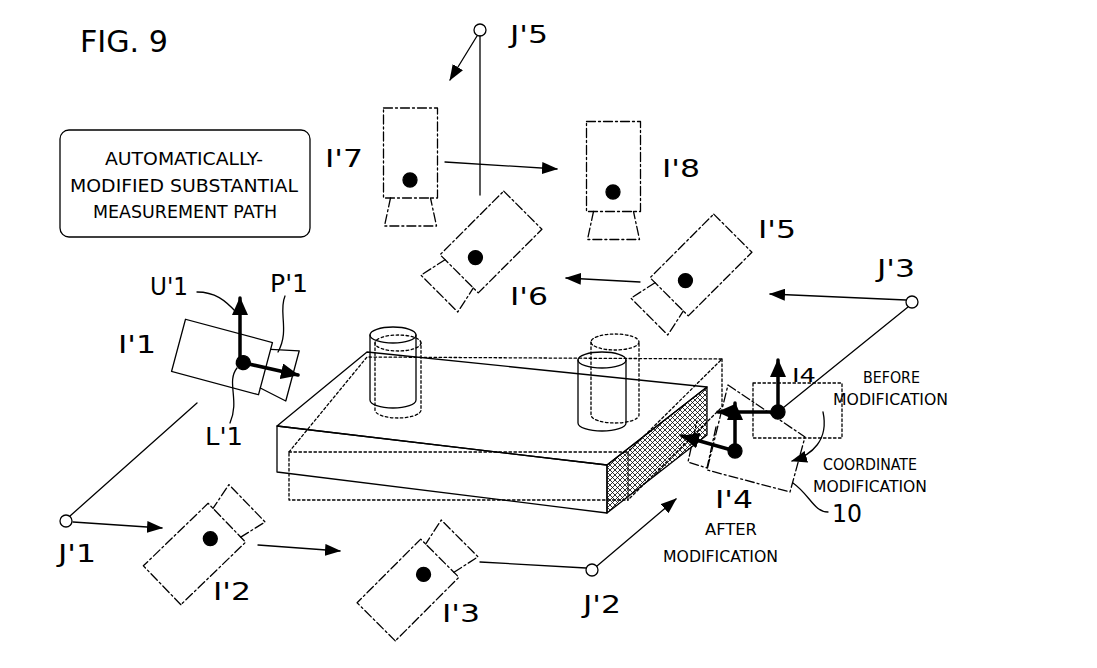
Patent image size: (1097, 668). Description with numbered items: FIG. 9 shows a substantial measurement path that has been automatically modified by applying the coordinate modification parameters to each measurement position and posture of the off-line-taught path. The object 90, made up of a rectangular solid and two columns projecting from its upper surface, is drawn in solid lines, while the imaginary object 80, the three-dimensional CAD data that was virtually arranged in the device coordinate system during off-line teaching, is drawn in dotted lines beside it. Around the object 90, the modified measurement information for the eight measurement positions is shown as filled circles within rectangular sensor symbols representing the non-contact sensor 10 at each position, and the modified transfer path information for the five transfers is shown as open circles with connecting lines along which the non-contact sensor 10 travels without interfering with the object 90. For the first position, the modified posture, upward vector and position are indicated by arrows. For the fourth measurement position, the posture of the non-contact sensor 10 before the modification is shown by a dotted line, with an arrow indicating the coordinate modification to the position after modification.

The non-contact sensor 10 is at (177, 362).
The imaginary object 80 is at (684, 358).
The object 90 is at (508, 492).